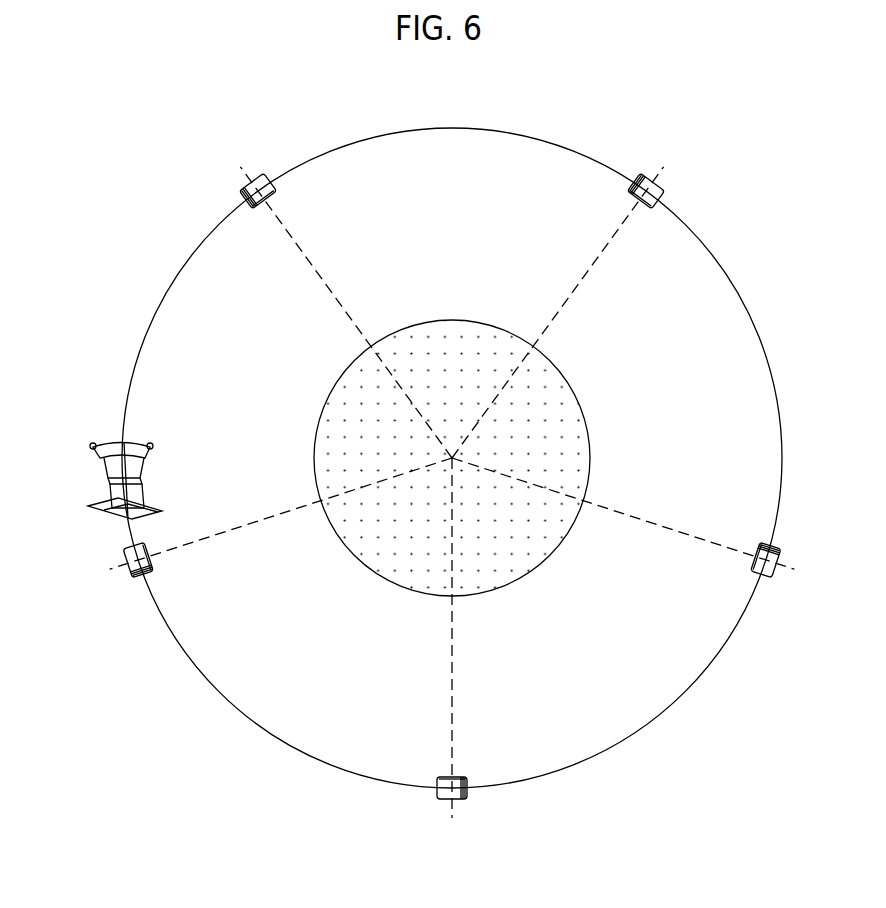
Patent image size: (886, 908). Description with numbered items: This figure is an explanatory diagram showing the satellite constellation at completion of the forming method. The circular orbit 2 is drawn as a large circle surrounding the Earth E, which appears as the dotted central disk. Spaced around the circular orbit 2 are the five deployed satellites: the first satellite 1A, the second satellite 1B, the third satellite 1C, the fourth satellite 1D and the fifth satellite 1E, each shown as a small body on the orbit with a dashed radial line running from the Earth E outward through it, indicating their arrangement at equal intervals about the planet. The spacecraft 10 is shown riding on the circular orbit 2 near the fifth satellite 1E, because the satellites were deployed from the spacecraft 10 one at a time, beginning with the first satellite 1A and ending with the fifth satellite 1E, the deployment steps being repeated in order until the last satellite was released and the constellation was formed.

The circular orbit 2 is at (462, 130).
The Earth E is at (466, 414).
The first satellite 1A is at (458, 778).
The second satellite 1B is at (759, 546).
The third satellite 1C is at (633, 196).
The fourth satellite 1D is at (255, 202).
The fifth satellite 1E is at (152, 566).
The spacecraft 10 is at (105, 432).